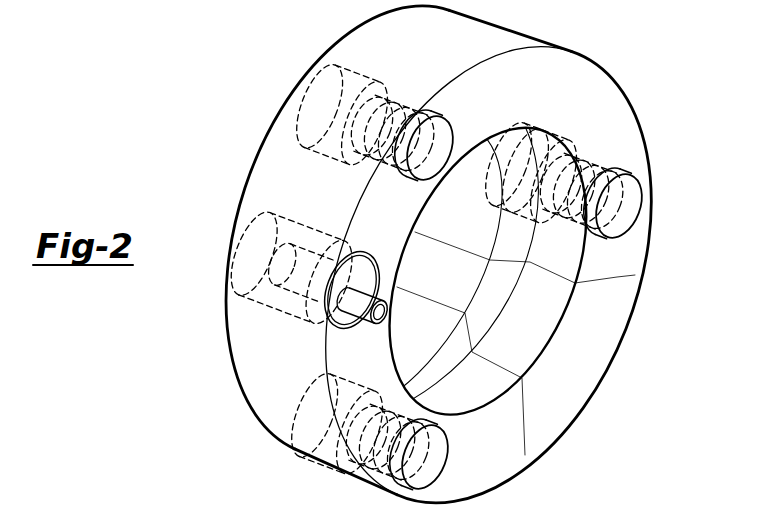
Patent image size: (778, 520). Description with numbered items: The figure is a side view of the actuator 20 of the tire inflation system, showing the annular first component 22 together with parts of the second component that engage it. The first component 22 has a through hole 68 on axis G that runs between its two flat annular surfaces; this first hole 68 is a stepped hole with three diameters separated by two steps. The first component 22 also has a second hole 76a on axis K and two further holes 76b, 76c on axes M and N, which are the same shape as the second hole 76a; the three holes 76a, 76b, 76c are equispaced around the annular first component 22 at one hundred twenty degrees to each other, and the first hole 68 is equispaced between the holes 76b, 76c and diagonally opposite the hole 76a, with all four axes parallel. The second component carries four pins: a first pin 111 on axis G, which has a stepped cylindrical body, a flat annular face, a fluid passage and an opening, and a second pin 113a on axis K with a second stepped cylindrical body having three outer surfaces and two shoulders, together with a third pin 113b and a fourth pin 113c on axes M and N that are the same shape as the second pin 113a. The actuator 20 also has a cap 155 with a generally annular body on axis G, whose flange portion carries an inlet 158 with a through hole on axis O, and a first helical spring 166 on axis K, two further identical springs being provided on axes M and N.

The actuator 20 is at (280, 74).
The first component 22 is at (628, 142).
The through hole 68 is at (301, 282).
The second hole 76a is at (603, 160).
The third hole 76b is at (387, 478).
The fourth hole 76c is at (414, 103).
The first pin 111 is at (373, 286).
The second pin 113a is at (633, 215).
The third pin 113b is at (439, 466).
The fourth pin 113c is at (444, 157).
The cap 155 is at (372, 268).
The inlet 158 is at (360, 310).
The first helical spring 166 is at (592, 220).